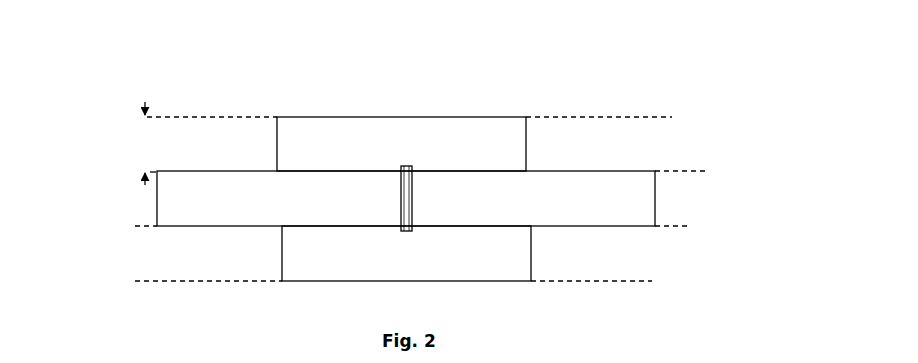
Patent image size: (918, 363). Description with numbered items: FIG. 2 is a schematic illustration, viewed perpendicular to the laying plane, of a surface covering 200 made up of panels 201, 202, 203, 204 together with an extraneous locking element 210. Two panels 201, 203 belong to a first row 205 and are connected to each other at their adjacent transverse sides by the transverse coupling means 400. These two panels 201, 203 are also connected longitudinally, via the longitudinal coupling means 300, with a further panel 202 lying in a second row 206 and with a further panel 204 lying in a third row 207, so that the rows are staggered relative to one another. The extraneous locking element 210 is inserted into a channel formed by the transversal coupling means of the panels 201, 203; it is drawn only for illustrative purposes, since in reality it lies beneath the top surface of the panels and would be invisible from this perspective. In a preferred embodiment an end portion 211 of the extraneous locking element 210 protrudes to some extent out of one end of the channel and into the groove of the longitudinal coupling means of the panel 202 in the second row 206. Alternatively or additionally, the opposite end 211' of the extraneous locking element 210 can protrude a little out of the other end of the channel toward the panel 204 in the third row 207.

The surface covering 200 is at (124, 130).
The panel 201 is at (406, 204).
The panel 202 is at (327, 134).
The panel 203 is at (187, 208).
The panel 204 is at (323, 260).
The first row 205 is at (695, 197).
The second row 206 is at (682, 143).
The third row 207 is at (658, 262).
The extraneous locking element 210 is at (424, 197).
The end portion 211 is at (439, 154).
The opposite end 211' is at (436, 272).
The longitudinal coupling means 300 is at (535, 139).
The transverse coupling means 400 is at (359, 159).